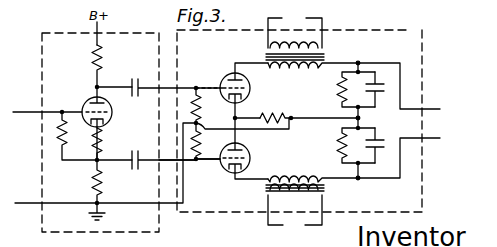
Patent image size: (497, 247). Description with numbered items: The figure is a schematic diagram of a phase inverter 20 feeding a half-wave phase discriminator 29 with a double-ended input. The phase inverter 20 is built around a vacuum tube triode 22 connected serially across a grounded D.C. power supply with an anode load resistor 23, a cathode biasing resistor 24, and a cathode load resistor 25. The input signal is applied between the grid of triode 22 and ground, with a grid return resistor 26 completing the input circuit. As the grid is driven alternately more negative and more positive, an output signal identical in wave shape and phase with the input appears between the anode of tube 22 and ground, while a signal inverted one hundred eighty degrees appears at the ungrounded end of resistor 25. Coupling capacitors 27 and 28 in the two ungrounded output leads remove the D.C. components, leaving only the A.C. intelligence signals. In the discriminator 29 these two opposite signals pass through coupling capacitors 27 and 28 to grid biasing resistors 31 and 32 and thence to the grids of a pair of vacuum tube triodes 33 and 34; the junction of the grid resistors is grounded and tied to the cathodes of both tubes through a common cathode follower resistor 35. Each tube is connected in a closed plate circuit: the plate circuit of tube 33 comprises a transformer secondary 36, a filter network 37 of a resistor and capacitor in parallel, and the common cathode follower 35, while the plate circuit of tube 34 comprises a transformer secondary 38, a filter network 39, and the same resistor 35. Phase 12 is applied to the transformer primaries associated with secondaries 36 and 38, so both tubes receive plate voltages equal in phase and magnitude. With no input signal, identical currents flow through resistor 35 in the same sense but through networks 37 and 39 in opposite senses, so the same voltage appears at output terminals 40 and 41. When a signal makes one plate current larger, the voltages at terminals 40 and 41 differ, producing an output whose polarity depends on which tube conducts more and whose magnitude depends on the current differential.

The phase 12 is at (295, 124).
The phase inverter 20 is at (57, 32).
The vacuum tube triode 22 is at (85, 102).
The anode load resistor 23 is at (104, 58).
The cathode biasing resistor 24 is at (112, 139).
The cathode load resistor 25 is at (95, 188).
The grid return resistor 26 is at (67, 129).
The coupling capacitor 27 is at (136, 99).
The coupling capacitor 28 is at (136, 172).
The half-wave discriminator 29 is at (413, 30).
The grid biasing resistor 31 is at (199, 96).
The grid biasing resistor 32 is at (200, 135).
The vacuum tube triode 33 is at (250, 84).
The vacuum tube triode 34 is at (250, 153).
The cathode follower resistor 35 is at (277, 115).
The transformer secondary 36 is at (293, 68).
The filter network 37 is at (360, 99).
The transformer secondary 38 is at (288, 172).
The filter network 39 is at (360, 152).
The output terminal 40 is at (359, 61).
The output terminal 41 is at (359, 179).